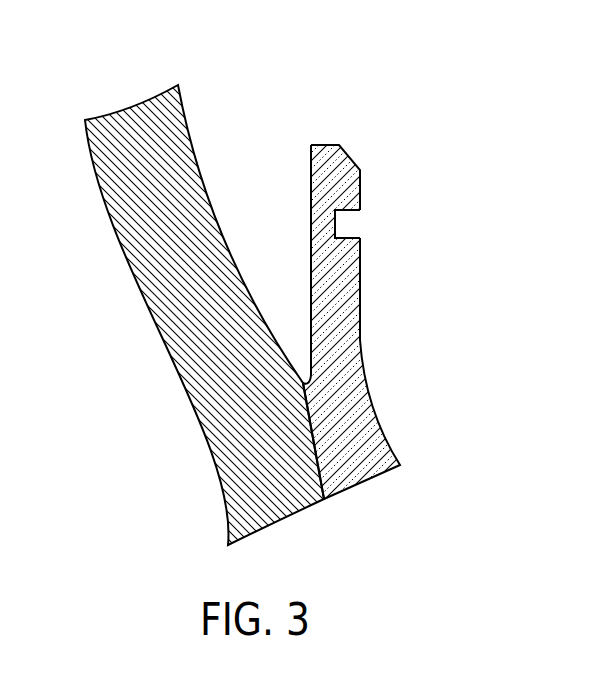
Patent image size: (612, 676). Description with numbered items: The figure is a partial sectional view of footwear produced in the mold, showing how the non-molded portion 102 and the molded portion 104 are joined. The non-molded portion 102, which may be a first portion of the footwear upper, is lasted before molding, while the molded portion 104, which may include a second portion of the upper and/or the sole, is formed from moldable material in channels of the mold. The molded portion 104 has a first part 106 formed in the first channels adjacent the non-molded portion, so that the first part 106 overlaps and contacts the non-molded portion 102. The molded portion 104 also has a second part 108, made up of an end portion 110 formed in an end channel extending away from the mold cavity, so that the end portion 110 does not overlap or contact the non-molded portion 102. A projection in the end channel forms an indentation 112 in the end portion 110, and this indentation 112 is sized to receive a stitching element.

The non-molded portion 102 is at (133, 108).
The molded portion 104 is at (363, 390).
The first part 106 is at (388, 458).
The second part 108 is at (353, 190).
The end portion 110 is at (352, 312).
The indentation 112 is at (341, 212).